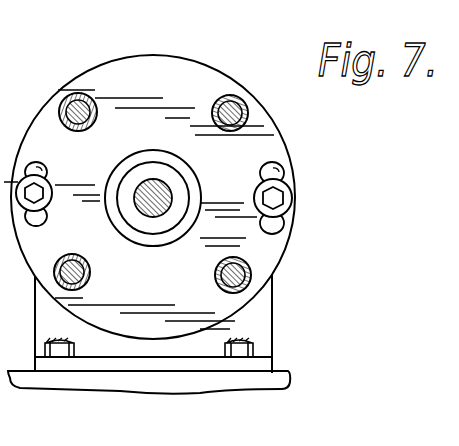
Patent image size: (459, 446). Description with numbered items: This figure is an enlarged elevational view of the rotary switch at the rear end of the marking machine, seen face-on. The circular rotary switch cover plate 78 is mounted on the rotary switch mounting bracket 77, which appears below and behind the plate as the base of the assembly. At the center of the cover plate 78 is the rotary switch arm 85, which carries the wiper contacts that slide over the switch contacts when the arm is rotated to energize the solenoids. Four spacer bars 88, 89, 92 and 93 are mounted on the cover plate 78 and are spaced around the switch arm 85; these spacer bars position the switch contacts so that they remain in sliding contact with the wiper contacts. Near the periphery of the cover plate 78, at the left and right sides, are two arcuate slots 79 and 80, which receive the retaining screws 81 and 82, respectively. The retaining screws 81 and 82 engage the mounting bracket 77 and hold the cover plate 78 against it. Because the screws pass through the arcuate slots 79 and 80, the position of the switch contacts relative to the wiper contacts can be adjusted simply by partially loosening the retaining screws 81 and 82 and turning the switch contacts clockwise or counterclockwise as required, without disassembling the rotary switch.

The rotary switch mounting bracket 77 is at (256, 320).
The rotary switch cover plate 78 is at (140, 66).
The arcuate slot 79 is at (38, 167).
The arcuate slot 80 is at (286, 174).
The retaining screw 81 is at (50, 202).
The retaining screw 82 is at (292, 199).
The rotary switch arm 85 is at (146, 182).
The spacer bar 88 is at (242, 97).
The spacer bar 89 is at (252, 273).
The spacer bar 92 is at (72, 95).
The spacer bar 93 is at (88, 282).